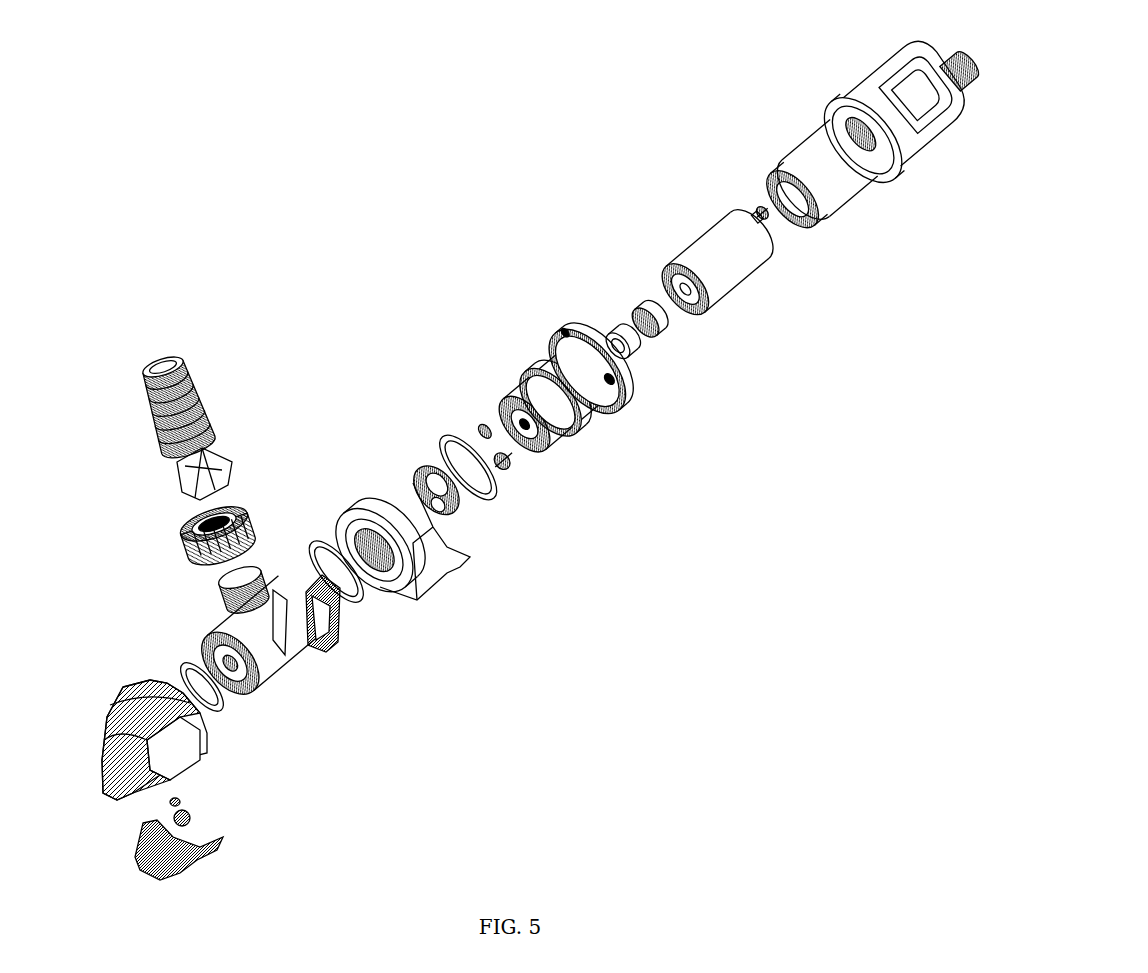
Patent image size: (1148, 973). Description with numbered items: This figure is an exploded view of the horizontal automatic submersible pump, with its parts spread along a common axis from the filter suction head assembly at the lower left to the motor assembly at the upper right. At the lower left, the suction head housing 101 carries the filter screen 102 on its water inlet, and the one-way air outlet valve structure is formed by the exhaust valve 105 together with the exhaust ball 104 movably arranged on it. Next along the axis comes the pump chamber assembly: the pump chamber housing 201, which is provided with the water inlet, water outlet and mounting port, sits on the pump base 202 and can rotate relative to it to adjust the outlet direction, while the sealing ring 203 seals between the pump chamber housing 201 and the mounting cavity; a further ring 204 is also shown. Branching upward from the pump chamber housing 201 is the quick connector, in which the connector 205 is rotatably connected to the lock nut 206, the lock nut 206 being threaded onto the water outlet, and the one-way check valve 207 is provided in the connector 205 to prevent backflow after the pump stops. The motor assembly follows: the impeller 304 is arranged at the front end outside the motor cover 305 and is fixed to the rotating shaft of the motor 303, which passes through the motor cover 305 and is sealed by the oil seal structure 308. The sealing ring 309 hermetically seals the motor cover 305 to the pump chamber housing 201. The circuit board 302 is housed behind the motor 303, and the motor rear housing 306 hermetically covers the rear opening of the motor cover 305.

The suction head housing 101 is at (127, 712).
The filter screen 102 is at (205, 845).
The exhaust ball 104 is at (180, 796).
The exhaust valve 105 is at (192, 814).
The pump chamber housing 201 is at (278, 675).
The pump base 202 is at (370, 495).
The sealing ring 203 is at (317, 532).
The sealing ring 204 is at (183, 672).
The connector 205 is at (152, 450).
The lock nut 206 is at (187, 553).
The one-way check valve 207 is at (180, 497).
The circuit board 302 is at (803, 137).
The motor 303 is at (690, 238).
The impeller 304 is at (427, 470).
The motor cover 305 is at (540, 362).
The motor rear housing 306 is at (868, 76).
The oil seal structure 308 is at (603, 318).
The sealing ring 309 is at (447, 436).